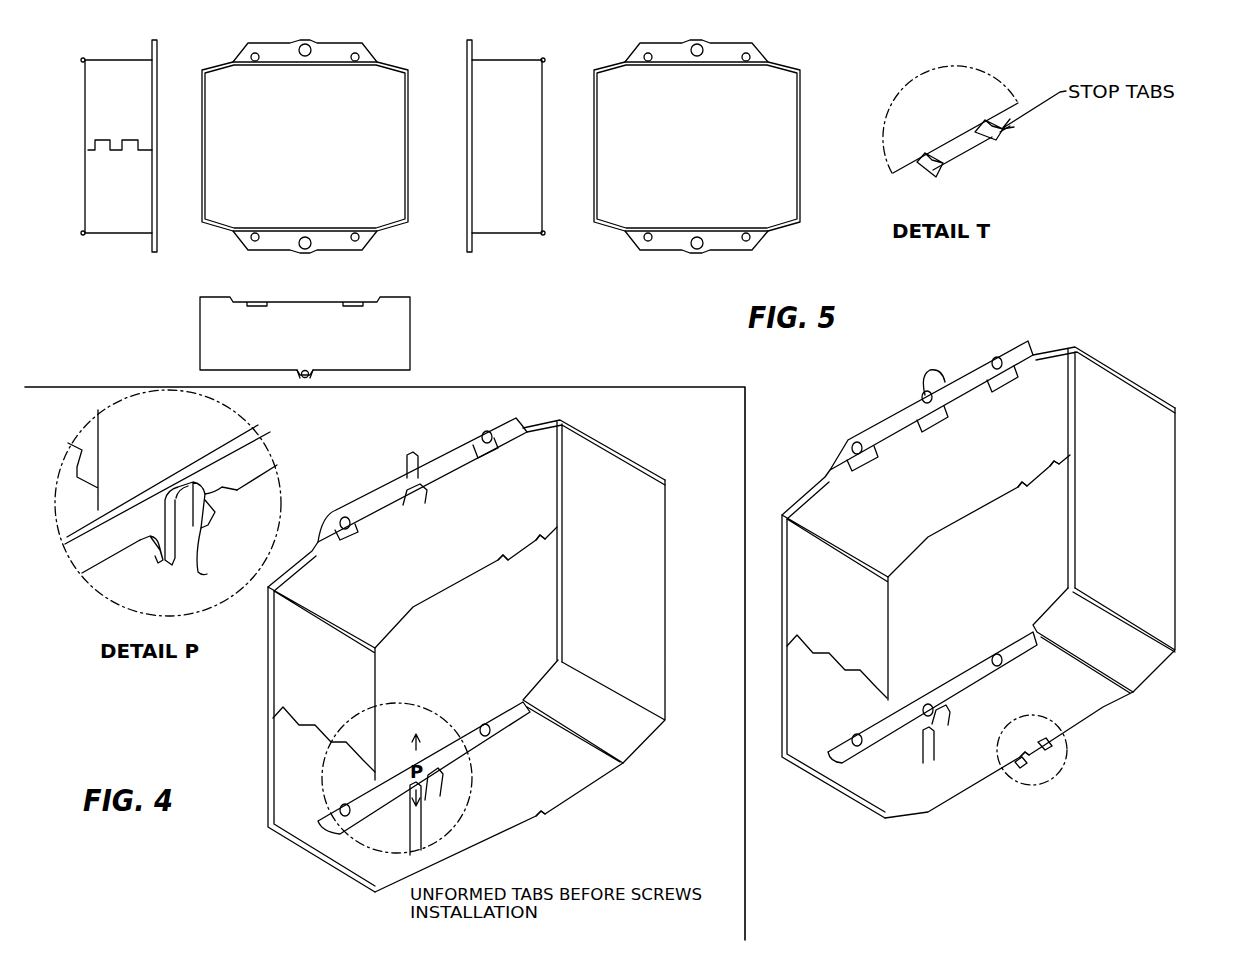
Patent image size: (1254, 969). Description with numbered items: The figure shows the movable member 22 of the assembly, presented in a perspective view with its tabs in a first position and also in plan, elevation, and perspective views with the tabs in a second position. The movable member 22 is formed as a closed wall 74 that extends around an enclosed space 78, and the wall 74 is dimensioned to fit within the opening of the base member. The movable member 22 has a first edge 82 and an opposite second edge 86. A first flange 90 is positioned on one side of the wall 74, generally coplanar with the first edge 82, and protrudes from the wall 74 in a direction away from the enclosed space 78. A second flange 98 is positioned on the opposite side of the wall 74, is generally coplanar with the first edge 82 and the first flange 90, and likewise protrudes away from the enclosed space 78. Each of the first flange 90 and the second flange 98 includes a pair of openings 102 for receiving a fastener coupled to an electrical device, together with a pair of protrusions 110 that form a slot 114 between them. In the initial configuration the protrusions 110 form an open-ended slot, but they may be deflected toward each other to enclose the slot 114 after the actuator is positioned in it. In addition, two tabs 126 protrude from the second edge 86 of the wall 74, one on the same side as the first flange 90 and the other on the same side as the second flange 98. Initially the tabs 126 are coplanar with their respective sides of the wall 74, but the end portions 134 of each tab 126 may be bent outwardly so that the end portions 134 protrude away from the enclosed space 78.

In FIG. 4, the movable member 22 is at (420, 67).
In FIG. 5, the movable member 22 is at (843, 77).
In FIG. 4, the closed wall 74 is at (113, 215).
In FIG. 5, the closed wall 74 is at (503, 212).
In FIG. 4, the enclosed space 78 is at (244, 197).
In FIG. 5, the enclosed space 78 is at (634, 212).
In FIG. 4, the first edge 82 is at (160, 108).
In FIG. 5, the first edge 82 is at (470, 175).
In FIG. 4, the second edge 86 is at (85, 120).
In FIG. 5, the second edge 86 is at (542, 125).
In FIG. 4, the first flange 90 is at (335, 240).
In FIG. 5, the first flange 90 is at (667, 245).
In FIG. 4, the second flange 98 is at (335, 48).
In FIG. 5, the second flange 98 is at (725, 52).
In FIG. 4, the openings 102 is at (487, 432).
In FIG. 5, the openings 102 is at (1000, 358).
In FIG. 4, the protrusions 110 is at (411, 452).
In FIG. 5, the protrusions 110 is at (932, 392).
In FIG. 4, the slot 114 is at (420, 478).
In FIG. 5, the slot 114 is at (927, 396).
In FIG. 4, the tabs 126 is at (305, 370).
In FIG. 5, the tabs 126 is at (921, 150).
In FIG. 5, the end portions 134 is at (932, 177).